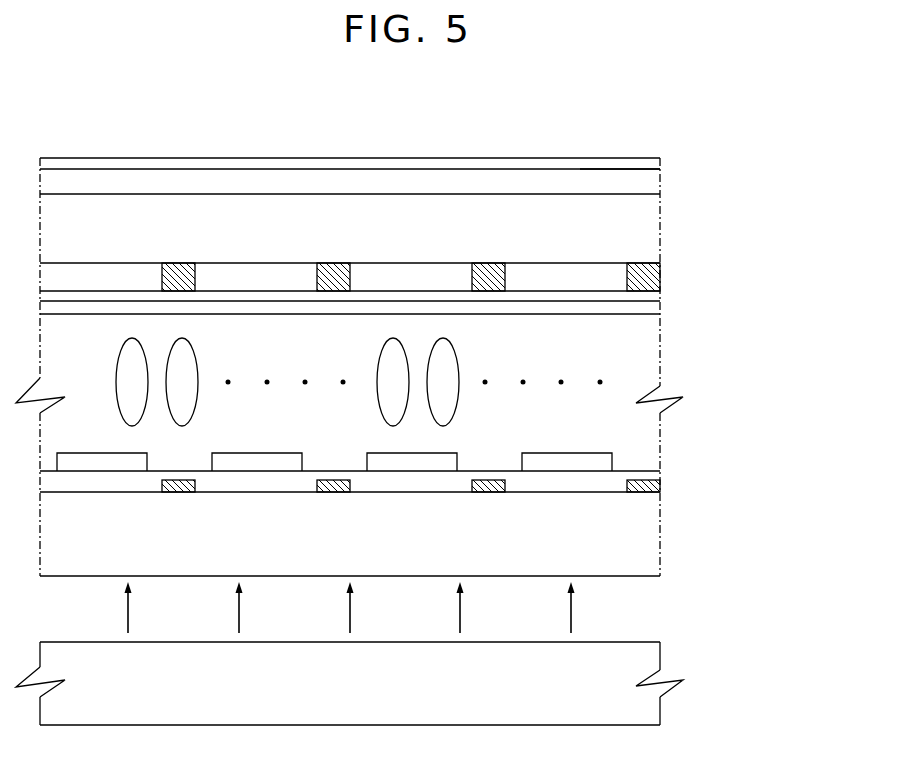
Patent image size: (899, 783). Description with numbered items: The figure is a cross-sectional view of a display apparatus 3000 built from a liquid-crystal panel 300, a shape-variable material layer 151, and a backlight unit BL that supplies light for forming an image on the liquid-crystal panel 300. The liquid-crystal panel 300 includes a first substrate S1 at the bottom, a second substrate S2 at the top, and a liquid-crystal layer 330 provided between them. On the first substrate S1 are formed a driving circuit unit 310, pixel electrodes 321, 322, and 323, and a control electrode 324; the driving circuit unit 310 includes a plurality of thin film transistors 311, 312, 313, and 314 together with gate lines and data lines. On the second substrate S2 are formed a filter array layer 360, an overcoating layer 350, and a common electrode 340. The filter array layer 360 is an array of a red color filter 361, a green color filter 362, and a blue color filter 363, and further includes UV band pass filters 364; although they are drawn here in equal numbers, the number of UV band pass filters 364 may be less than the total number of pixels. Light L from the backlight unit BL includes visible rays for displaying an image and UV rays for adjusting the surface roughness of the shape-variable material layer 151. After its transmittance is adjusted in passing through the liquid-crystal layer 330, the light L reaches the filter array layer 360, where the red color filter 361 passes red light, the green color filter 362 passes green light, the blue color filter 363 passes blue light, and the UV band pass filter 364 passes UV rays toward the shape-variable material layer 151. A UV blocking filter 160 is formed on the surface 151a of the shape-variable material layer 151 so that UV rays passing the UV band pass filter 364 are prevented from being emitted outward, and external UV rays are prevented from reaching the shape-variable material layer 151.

The display apparatus 3000 is at (660, 114).
The liquid-crystal panel 300 is at (772, 193).
The UV blocking filter 160 is at (645, 164).
The shape-variable material layer 151 is at (645, 183).
The surface of the shape-variable material layer 151a is at (606, 166).
The second substrate S2 is at (645, 233).
The filter array layer 360 is at (409, 200).
The red color filter 361 is at (68, 275).
The green color filter 362 is at (222, 275).
The blue color filter 363 is at (375, 275).
The UV band pass filter 364 is at (528, 275).
The overcoating layer 350 is at (645, 297).
The common electrode 340 is at (645, 313).
The liquid-crystal layer 330 is at (645, 352).
The driving circuit unit 310 is at (409, 498).
The thin film transistor 311 is at (176, 486).
The thin film transistor 312 is at (333, 486).
The thin film transistor 313 is at (487, 486).
The thin film transistor 314 is at (662, 485).
The pixel electrode 321 is at (97, 462).
The pixel electrode 322 is at (255, 462).
The pixel electrode 323 is at (408, 462).
The control electrode 324 is at (563, 462).
The first substrate S1 is at (645, 556).
The light L is at (352, 607).
The backlight unit BL is at (645, 655).